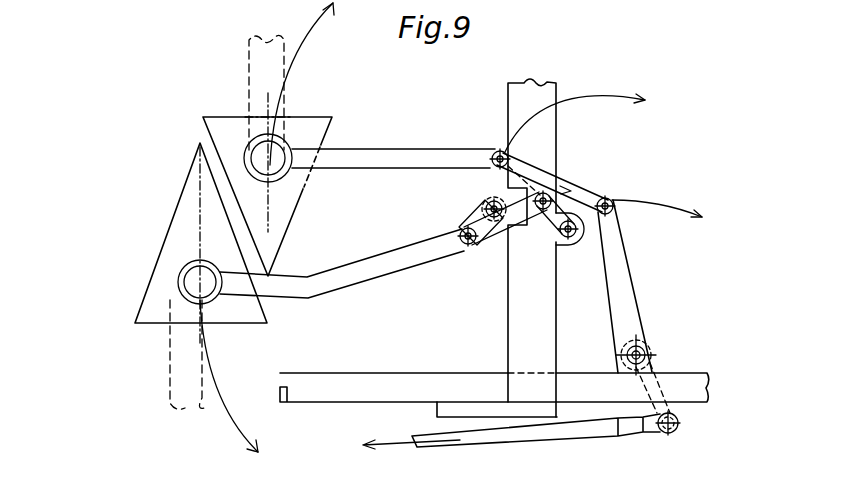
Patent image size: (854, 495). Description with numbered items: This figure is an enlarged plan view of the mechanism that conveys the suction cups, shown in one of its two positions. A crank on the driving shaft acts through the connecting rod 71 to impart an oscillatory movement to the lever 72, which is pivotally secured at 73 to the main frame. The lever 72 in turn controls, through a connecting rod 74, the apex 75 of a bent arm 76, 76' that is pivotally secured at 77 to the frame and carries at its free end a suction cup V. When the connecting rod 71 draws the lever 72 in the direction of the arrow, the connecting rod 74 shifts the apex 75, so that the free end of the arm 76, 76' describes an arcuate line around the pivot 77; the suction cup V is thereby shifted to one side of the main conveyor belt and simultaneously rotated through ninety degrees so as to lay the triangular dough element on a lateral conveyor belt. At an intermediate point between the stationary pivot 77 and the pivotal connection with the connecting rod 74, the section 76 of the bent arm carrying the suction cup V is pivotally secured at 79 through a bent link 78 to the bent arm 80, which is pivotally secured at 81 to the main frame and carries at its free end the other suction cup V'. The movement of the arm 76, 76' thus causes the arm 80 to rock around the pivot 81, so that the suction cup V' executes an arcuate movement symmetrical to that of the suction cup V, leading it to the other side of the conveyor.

The connecting rod 71 is at (562, 435).
The lever 72 is at (622, 288).
The pivot 73 is at (646, 342).
The connecting rod 74 is at (583, 193).
The apex 75 is at (496, 153).
The bent arm section 76 is at (524, 249).
The bent arm section 76' is at (393, 116).
The pivot 77 is at (582, 233).
The bent link 78 is at (500, 232).
The pivot 79 is at (458, 234).
The bent arm 80 is at (348, 284).
The pivot 81 is at (482, 201).
The suction cup V is at (294, 186).
The suction cup V' is at (179, 233).